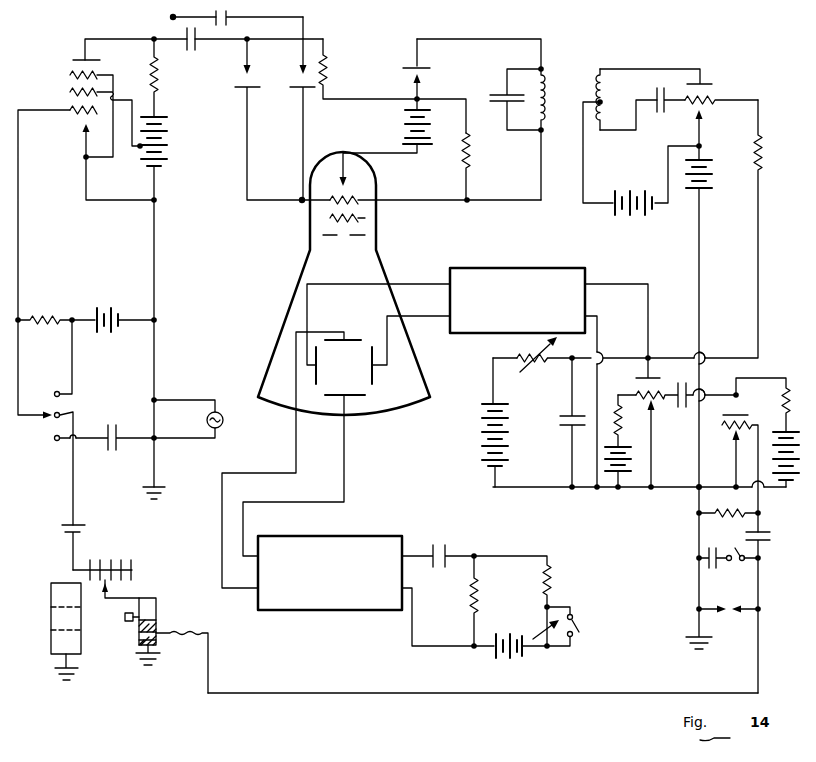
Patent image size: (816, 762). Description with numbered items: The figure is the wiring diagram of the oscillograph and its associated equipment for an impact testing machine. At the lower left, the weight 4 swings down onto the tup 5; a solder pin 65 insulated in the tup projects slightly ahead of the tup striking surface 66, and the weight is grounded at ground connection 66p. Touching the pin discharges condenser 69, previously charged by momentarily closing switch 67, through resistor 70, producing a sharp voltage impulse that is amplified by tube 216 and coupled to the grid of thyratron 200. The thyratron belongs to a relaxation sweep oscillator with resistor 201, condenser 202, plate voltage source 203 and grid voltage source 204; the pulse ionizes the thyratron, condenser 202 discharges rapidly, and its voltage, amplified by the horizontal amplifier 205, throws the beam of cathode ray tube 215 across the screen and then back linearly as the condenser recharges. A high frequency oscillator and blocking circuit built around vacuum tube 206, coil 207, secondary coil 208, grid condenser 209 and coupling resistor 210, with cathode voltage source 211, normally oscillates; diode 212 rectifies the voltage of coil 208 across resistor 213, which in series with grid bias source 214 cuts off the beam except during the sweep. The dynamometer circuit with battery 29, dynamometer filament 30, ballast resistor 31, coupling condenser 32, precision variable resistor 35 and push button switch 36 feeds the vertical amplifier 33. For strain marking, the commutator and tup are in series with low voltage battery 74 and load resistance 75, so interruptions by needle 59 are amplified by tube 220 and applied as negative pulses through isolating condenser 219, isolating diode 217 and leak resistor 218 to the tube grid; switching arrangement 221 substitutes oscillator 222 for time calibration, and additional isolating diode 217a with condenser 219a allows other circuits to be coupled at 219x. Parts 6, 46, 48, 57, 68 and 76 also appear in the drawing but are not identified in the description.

The weight 4 is at (52, 599).
The tup 5 is at (156, 604).
The contact plug 6 is at (128, 623).
The battery 29 is at (506, 663).
The dynamometer filament 30 is at (544, 579).
The ballast resistor 31 is at (478, 605).
The condenser 32 is at (447, 552).
The vertical amplifier 33 is at (378, 542).
The precision variable resistor 35 is at (538, 623).
The push button switch 36 is at (580, 624).
The conductor 46 is at (68, 559).
The comb electrode 48 is at (128, 536).
The lead 57 is at (128, 597).
The needle 59 is at (98, 588).
The solder pin 65 is at (160, 628).
The tup striking surface 66 is at (138, 604).
The ground connection 66p is at (56, 660).
The switch 67 is at (738, 562).
The capacitor 68 is at (718, 551).
The condenser 69 is at (762, 529).
The resistor 70 is at (720, 509).
The low voltage battery 74 is at (70, 507).
The load resistance 75 is at (50, 314).
The ground 76 is at (160, 655).
The thyratron 200 is at (660, 390).
The resistor 201 is at (551, 362).
The condenser 202 is at (571, 429).
The plate voltage source 203 is at (486, 406).
The grid voltage source 204 is at (635, 470).
The horizontal amplifier 205 is at (548, 252).
The vacuum tube 206 is at (708, 86).
The coil 207 is at (592, 80).
The secondary coil 208 is at (548, 90).
The grid condenser 209 is at (667, 108).
The coupling resistor 210 is at (764, 140).
The cathode voltage source 211 is at (712, 172).
The diode vacuum tube 212 is at (436, 70).
The resistor 213 is at (472, 155).
The grid bias source 214 is at (403, 128).
The cathode ray tube 215 is at (336, 370).
The amplifier tube 216 is at (761, 416).
The isolating diode vacuum tube 217 is at (262, 82).
The additional diode isolating element 217a is at (290, 80).
The leak resistor 218 is at (328, 72).
The high voltage isolating condenser 219 is at (196, 48).
The condenser 219a is at (229, 19).
The coupling point 219x is at (171, 17).
The amplifier tube 220 is at (66, 83).
The switching arrangement 221 is at (73, 408).
The oscillator 222 is at (224, 420).